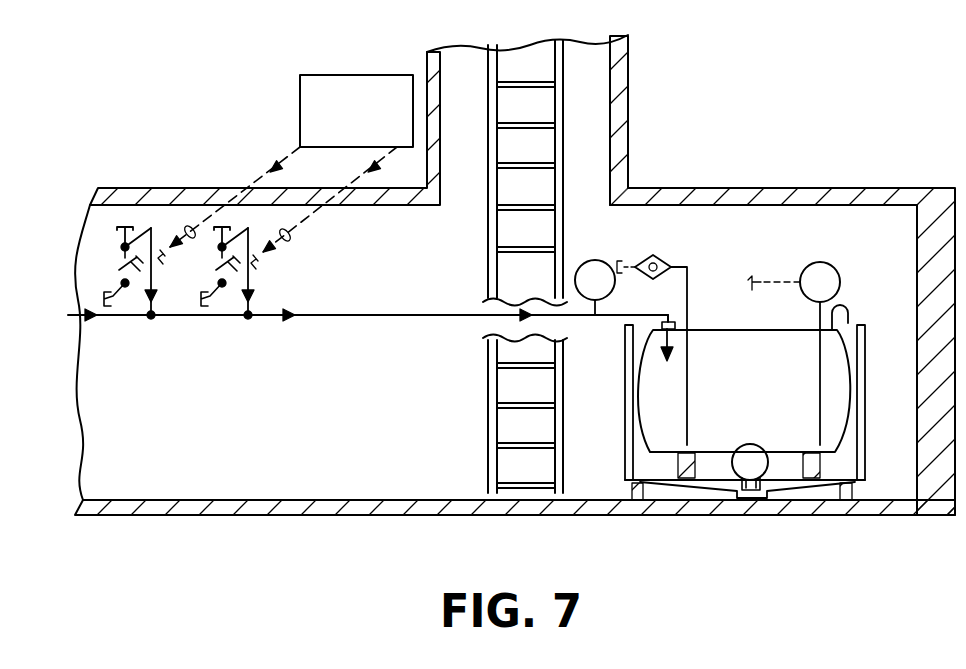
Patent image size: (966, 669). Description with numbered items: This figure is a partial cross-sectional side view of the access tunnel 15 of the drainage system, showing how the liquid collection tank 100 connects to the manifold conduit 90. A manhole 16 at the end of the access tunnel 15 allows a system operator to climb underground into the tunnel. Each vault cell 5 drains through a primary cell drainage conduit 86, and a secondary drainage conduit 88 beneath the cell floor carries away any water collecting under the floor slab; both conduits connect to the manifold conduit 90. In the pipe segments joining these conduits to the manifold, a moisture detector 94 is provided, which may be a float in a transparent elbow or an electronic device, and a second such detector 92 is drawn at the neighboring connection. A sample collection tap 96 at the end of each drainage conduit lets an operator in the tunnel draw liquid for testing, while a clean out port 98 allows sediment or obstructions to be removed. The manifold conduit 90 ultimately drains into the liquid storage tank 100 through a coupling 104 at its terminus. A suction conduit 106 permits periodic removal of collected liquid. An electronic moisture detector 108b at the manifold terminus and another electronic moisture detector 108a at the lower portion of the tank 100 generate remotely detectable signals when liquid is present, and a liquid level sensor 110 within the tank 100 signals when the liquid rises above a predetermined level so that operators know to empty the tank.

The manhole 16 is at (630, 68).
The access tunnel 15 is at (778, 198).
The vault cell 5 is at (362, 116).
The primary cell drainage conduit 86 is at (259, 183).
The secondary drainage conduit 88 is at (318, 213).
The sample collection tap 96 is at (211, 233).
The switch 92 is at (130, 276).
The moisture detector 94 is at (222, 260).
The clean out port 98 is at (108, 306).
The manifold conduit 90 is at (327, 315).
The electronic moisture detector 108b is at (597, 272).
The suction conduit 106 is at (660, 256).
The liquid level sensor 110 is at (826, 272).
The coupling 104 is at (657, 329).
The liquid storage tank 100 is at (763, 383).
The electronic moisture detector 108a is at (757, 467).